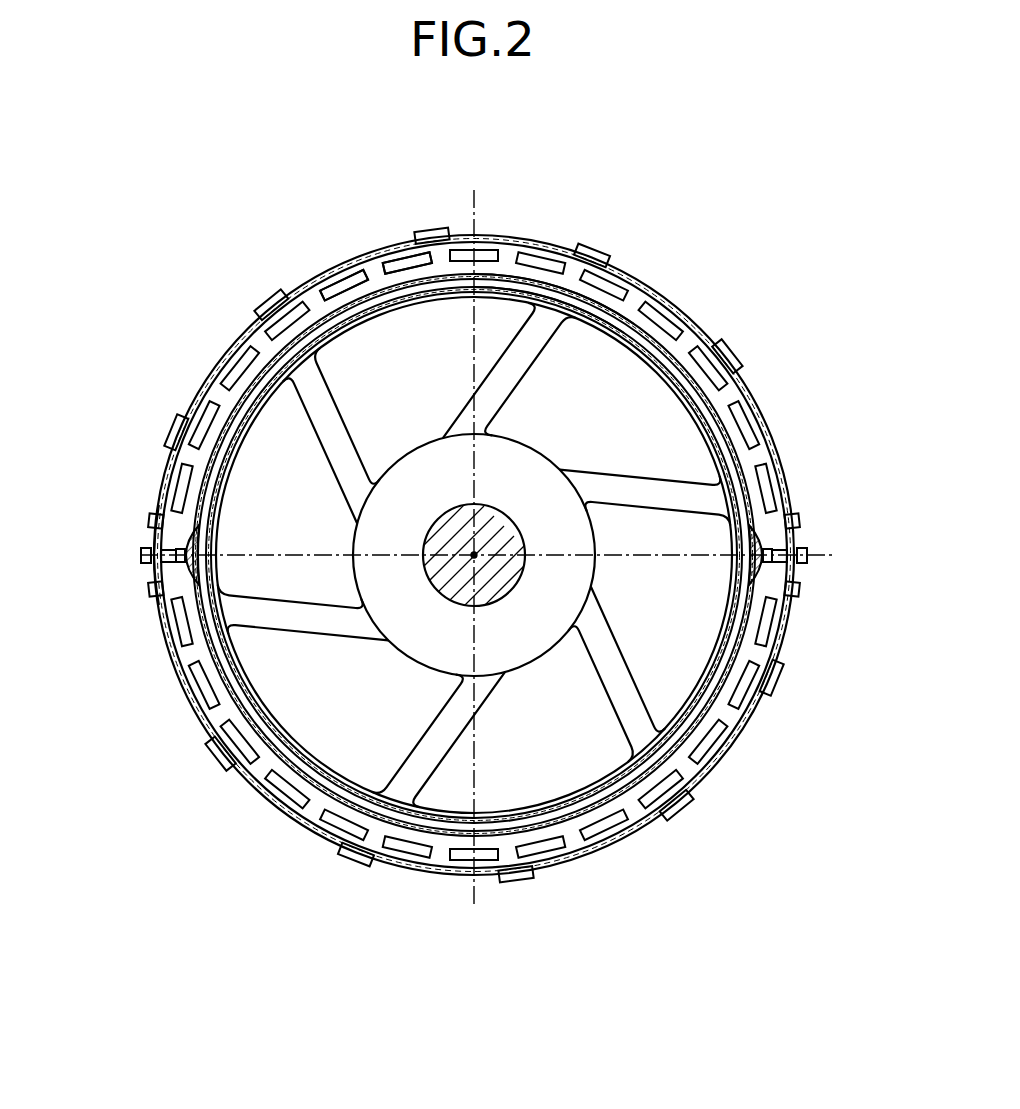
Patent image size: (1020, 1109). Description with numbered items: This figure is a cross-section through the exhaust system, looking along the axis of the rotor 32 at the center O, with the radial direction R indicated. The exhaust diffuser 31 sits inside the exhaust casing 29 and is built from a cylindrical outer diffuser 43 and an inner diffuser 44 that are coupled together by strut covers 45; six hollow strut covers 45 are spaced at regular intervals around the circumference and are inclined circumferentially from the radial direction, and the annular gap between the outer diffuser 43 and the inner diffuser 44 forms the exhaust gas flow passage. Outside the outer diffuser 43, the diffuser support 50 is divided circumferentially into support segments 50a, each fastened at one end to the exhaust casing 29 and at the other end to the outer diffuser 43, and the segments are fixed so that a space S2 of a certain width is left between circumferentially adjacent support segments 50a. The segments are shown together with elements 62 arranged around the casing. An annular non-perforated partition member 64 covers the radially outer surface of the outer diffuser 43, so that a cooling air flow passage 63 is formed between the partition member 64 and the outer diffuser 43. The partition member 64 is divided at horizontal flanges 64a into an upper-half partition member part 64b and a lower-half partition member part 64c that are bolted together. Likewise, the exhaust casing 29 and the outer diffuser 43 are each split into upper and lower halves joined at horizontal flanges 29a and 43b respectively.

The center axis O is at (474, 555).
The radial direction R is at (347, 270).
The exhaust casing 29 is at (687, 293).
The horizontal flanges 29a is at (156, 572).
The exhaust diffuser 31 is at (726, 413).
The rotor 32 is at (430, 604).
The outer diffuser 43 is at (707, 720).
The horizontal flanges 43b is at (178, 545).
The inner diffuser 44 is at (596, 792).
The strut cover 45 is at (512, 352).
The diffuser support 50 is at (388, 243).
The support segments 50a is at (405, 240).
The coil 62 is at (429, 226).
The cooling air flow passage 63 is at (540, 300).
The partition member 64 is at (685, 341).
The horizontal flanges 64a is at (137, 555).
The upper-half partition member part 64b is at (728, 437).
The lower-half partition member part 64c is at (552, 667).
The space S2 is at (727, 390).